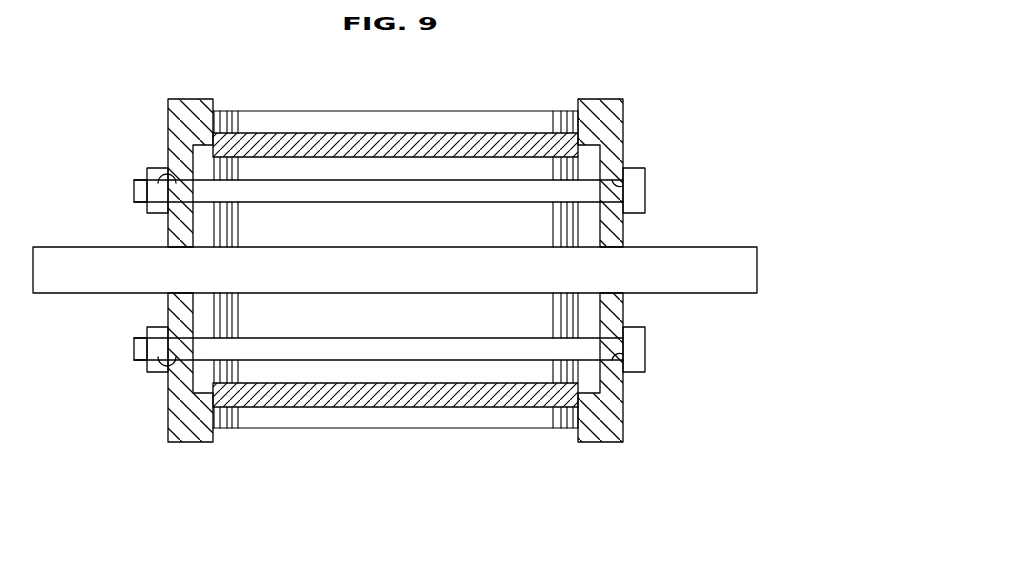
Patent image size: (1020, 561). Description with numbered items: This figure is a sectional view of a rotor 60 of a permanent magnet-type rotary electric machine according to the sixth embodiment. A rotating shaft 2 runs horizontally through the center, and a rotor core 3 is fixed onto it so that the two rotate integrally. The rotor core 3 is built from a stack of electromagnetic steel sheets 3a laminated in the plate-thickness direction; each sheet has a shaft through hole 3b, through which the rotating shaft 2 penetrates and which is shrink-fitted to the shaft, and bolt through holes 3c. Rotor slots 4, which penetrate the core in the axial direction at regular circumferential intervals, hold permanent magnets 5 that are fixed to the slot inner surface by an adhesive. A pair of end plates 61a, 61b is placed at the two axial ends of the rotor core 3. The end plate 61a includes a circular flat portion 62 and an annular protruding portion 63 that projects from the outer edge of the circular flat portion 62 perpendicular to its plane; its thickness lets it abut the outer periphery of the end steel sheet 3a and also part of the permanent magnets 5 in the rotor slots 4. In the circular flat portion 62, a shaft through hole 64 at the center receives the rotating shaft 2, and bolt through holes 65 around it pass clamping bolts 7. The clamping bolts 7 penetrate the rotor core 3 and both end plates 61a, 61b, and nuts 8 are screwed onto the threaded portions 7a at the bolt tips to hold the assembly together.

The rotating shaft 2 is at (723, 262).
The rotor core 3 is at (275, 118).
The electromagnetic steel sheet 3a is at (229, 111).
The shaft through hole 3b is at (508, 248).
The bolt through hole 3c is at (356, 180).
The rotor slot 4 is at (473, 133).
The permanent magnet 5 is at (316, 142).
The clamping bolt 7 is at (645, 193).
The threaded portion 7a is at (134, 190).
The nut 8 is at (155, 207).
The jig 60 is at (621, 80).
The end plate 61a is at (166, 106).
The end plate 61b is at (626, 102).
The circular flat portion 62 is at (175, 238).
The annular protruding portion 63 is at (205, 118).
The shaft through hole 64 is at (172, 296).
The bolt through hole 65 is at (160, 172).